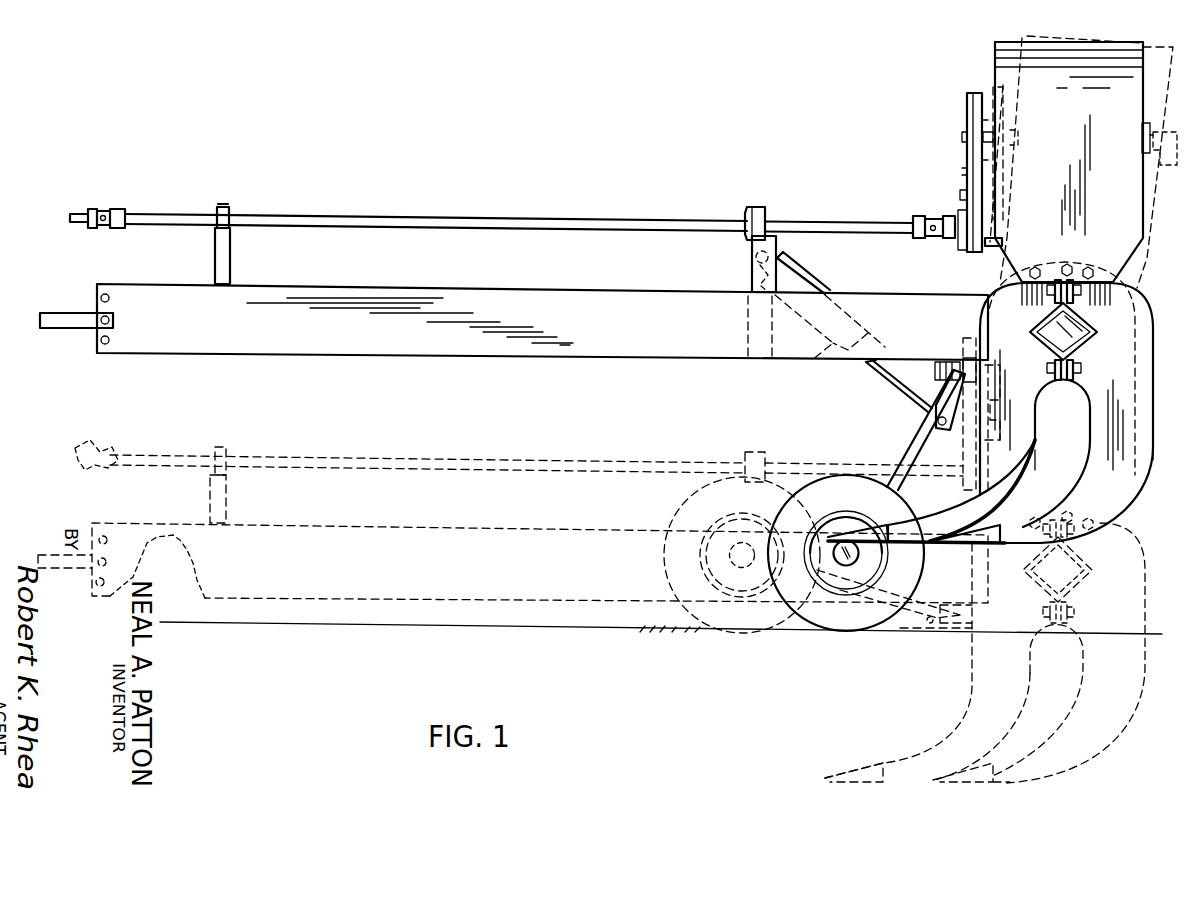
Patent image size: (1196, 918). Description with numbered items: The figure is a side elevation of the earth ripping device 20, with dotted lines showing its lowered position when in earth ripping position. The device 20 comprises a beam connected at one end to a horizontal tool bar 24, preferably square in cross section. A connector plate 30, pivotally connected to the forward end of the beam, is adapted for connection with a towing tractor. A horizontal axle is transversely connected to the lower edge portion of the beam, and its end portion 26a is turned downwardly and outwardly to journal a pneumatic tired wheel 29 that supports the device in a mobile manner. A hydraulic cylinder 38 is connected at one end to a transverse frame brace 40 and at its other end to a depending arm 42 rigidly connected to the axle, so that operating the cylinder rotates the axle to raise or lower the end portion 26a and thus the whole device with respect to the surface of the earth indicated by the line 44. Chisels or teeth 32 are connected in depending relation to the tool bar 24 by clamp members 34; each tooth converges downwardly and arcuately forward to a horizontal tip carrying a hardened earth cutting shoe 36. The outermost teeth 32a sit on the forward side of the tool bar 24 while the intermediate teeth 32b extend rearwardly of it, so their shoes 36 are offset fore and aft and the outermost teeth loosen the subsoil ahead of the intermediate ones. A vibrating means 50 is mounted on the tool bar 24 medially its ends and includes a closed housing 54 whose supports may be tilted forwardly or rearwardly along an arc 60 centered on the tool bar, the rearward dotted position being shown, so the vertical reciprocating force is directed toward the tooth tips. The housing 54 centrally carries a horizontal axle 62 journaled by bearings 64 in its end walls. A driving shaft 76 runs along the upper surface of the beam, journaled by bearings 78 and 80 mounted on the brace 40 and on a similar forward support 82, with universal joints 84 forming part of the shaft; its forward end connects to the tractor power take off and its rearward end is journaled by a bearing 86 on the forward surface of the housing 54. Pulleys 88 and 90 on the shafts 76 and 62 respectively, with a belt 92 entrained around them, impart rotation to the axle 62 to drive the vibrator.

The device 20 is at (655, 147).
The tool bar 24 is at (1080, 358).
The axle end portion 26a is at (905, 455).
The pneumatic tired wheel 29 is at (845, 475).
The connector plate 30 is at (68, 315).
The chisel or tooth 32 is at (1085, 445).
The outermost tooth 32a is at (1022, 468).
The intermediate tooth 32b is at (1148, 472).
The clamp member 34 is at (1085, 318).
The shoe or plate 36 is at (871, 528).
The hydraulic cylinder 38 is at (805, 278).
The transverse frame brace 40 is at (750, 268).
The depending arm 42 is at (942, 427).
The surface of the earth 44 is at (525, 628).
The vibrating means 50 is at (979, 65).
The housing 54 is at (995, 44).
The arc 60 is at (1078, 262).
The horizontal axle 62 is at (962, 137).
The bearing 64 is at (972, 122).
The driving shaft 76 is at (548, 215).
The bearing 78 is at (747, 212).
The bearing 80 is at (230, 215).
The forward support 82 is at (233, 265).
The universal joint 84 is at (93, 212).
The bearing 86 is at (992, 240).
The pulley 88 is at (958, 218).
The pulley 90 is at (968, 170).
The belt 92 is at (962, 193).